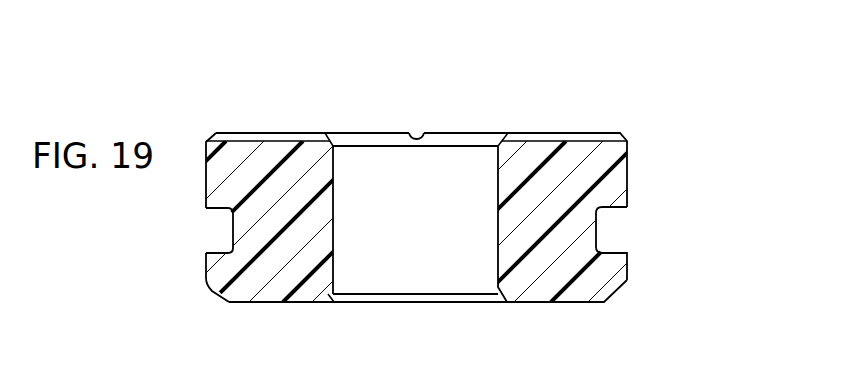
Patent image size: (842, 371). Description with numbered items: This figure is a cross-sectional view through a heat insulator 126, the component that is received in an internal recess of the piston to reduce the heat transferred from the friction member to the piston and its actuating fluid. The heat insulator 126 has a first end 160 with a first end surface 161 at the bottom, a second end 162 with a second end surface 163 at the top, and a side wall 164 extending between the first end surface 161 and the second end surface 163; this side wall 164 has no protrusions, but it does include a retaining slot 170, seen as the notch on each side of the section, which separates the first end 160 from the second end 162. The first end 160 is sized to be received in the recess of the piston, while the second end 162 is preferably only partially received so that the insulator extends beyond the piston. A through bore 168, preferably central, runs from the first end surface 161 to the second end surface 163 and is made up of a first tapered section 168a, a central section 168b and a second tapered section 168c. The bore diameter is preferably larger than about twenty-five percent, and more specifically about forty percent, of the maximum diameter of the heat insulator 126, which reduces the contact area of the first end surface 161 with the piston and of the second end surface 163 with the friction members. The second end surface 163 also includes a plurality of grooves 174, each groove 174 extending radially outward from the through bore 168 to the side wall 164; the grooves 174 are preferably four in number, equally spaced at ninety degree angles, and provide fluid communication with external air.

The heat insulator 126 is at (614, 90).
The first end 160 is at (636, 268).
The first end surface 161 is at (537, 303).
The second end 162 is at (636, 170).
The second end surface 163 is at (552, 130).
The side wall 164 is at (198, 201).
The through bore 168 is at (441, 178).
The first tapered section 168a is at (337, 303).
The central section 168b is at (334, 217).
The second tapered section 168c is at (335, 132).
The retaining slot 170 is at (222, 248).
The groove 174 is at (263, 132).